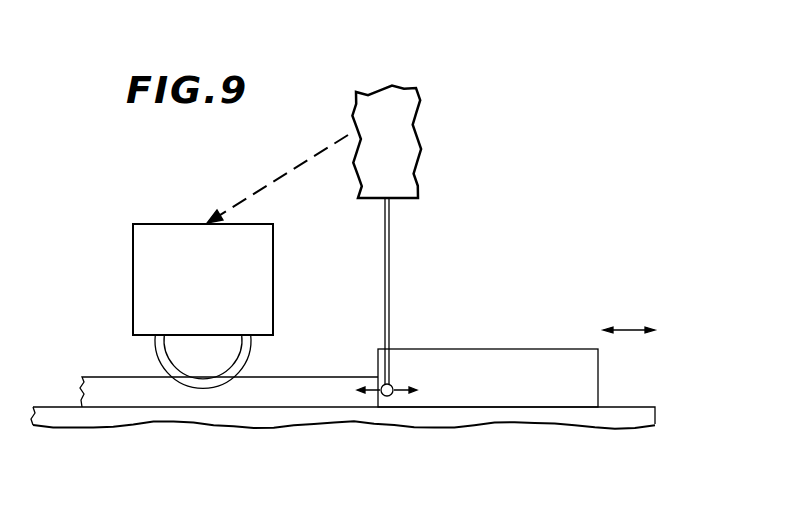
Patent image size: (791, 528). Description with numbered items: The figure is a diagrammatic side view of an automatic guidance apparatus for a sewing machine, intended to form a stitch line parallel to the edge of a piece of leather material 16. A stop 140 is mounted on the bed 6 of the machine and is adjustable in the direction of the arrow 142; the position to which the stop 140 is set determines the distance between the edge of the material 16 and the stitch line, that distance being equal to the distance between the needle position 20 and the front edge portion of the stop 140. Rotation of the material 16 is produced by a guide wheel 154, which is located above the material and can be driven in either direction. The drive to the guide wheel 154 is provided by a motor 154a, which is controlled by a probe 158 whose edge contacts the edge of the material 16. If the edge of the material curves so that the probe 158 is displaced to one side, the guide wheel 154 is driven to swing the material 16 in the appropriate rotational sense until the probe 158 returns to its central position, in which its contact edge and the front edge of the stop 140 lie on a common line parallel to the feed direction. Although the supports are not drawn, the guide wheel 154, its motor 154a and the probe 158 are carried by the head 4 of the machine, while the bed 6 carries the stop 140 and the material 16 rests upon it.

The head 4 is at (410, 118).
The probe 158 is at (390, 252).
The motor 154a is at (163, 224).
The guide wheel 154 is at (157, 343).
The needle position 20 is at (332, 364).
The stop 140 is at (470, 349).
The arrow 142 is at (630, 328).
The bed 6 is at (620, 407).
The material 16 is at (167, 400).